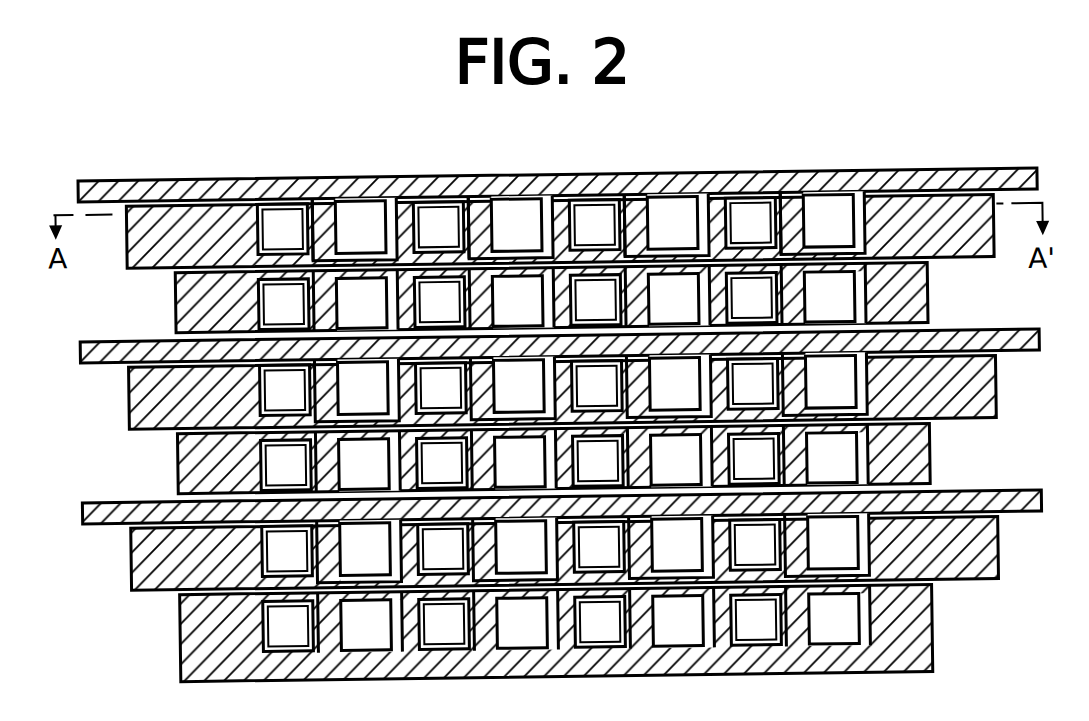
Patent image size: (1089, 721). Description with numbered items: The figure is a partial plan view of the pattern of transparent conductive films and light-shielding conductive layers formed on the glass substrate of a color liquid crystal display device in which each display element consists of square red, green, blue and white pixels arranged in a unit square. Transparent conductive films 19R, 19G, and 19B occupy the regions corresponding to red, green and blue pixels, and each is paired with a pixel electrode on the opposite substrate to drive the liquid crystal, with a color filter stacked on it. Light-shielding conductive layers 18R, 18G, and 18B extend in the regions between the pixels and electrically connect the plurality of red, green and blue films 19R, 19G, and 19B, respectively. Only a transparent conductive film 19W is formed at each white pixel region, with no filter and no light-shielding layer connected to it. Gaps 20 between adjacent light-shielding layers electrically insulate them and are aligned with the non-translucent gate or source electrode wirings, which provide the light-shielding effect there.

The light-shielding conductive layer 18R is at (128, 238).
The light-shielding conductive layer 18G is at (183, 186).
The light-shielding conductive layer 18B is at (174, 322).
The transparent conductive film 19R is at (264, 219).
The transparent conductive film 19G is at (357, 206).
The transparent conductive film 19B is at (397, 281).
The transparent conductive film 19W is at (256, 303).
The gap 20 is at (323, 244).